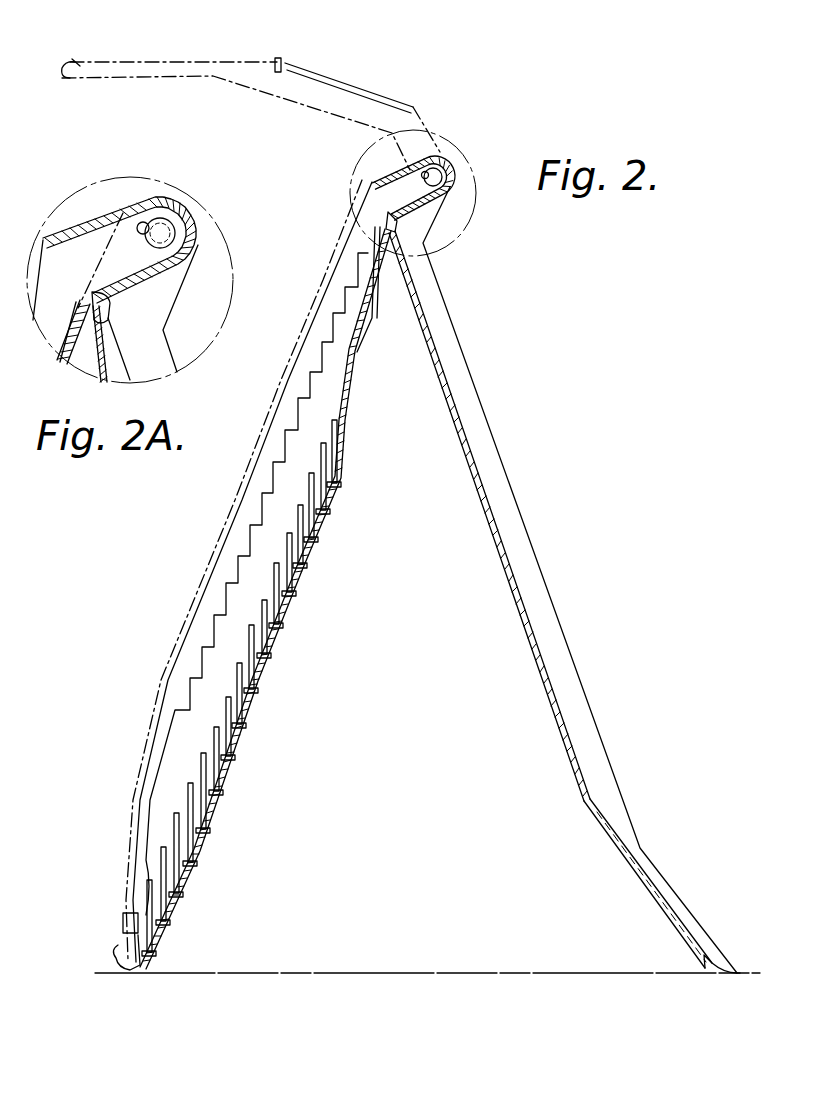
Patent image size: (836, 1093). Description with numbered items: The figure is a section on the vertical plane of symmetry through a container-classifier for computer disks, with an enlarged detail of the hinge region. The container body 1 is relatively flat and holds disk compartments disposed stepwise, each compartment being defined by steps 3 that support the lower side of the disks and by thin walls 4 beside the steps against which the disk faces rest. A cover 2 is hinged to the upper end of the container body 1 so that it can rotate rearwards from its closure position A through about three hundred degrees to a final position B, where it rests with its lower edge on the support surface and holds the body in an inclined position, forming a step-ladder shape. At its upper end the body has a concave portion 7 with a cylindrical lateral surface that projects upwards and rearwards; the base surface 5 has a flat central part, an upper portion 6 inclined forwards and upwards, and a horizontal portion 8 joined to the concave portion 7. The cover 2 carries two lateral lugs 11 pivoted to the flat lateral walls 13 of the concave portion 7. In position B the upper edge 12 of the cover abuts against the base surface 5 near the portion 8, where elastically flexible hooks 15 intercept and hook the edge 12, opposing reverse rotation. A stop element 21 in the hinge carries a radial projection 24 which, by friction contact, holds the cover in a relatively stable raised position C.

In FIG. 2, the container body 1 is at (267, 683).
In FIG. 2, the cover 2 is at (209, 82).
In FIG. 2A, the cover 2 is at (169, 342).
In FIG. 2, the steps 3 is at (319, 520).
In FIG. 2, the thin walls 4 is at (200, 752).
In FIG. 2, the base surface 5 is at (245, 712).
In FIG. 2, the upper portion 6 is at (343, 447).
In FIG. 2A, the upper portion 6 is at (82, 364).
In FIG. 2, the concave portion 7 is at (412, 166).
In FIG. 2A, the concave portion 7 is at (123, 215).
In FIG. 2, the horizontal portion 8 is at (376, 266).
In FIG. 2, the lateral lugs 11 is at (427, 218).
In FIG. 2A, the lateral lugs 11 is at (172, 283).
In FIG. 2A, the upper edge 12 is at (101, 340).
In FIG. 2A, the flat lateral walls 13 is at (80, 245).
In FIG. 2, the hooks 15 is at (396, 230).
In FIG. 2A, the hooks 15 is at (110, 317).
In FIG. 2, the stop element 21 is at (436, 175).
In FIG. 2A, the stop element 21 is at (161, 212).
In FIG. 2A, the radial projection 24 is at (140, 220).
In FIG. 2, the closure position A is at (179, 634).
In FIG. 2, the final position B is at (513, 483).
In FIG. 2A, the final position B is at (172, 317).
In FIG. 2, the stable position C is at (268, 60).